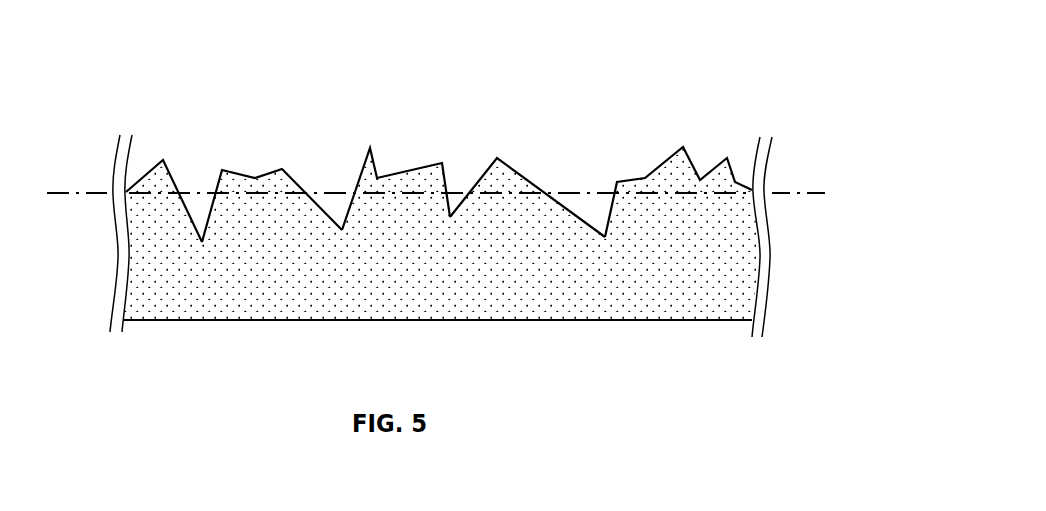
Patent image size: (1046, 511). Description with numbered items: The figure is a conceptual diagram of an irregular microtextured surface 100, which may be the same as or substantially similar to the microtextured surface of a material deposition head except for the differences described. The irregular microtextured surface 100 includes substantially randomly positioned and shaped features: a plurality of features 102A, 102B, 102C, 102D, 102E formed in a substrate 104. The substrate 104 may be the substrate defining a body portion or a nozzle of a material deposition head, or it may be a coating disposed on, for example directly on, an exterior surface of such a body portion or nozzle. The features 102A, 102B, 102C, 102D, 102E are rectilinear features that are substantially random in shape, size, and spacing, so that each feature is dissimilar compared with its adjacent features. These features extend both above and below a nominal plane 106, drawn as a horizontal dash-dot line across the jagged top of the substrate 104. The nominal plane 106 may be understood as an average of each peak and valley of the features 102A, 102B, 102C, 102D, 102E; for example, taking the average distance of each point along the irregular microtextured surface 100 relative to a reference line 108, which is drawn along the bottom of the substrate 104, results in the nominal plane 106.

The irregular microtextured surface 100 is at (825, 47).
The feature 102A is at (163, 160).
The feature 102B is at (263, 175).
The feature 102C is at (370, 148).
The feature 102D is at (513, 168).
The feature 102E is at (647, 178).
The substrate 104 is at (302, 306).
The nominal plane 106 is at (100, 190).
The reference line 108 is at (663, 320).